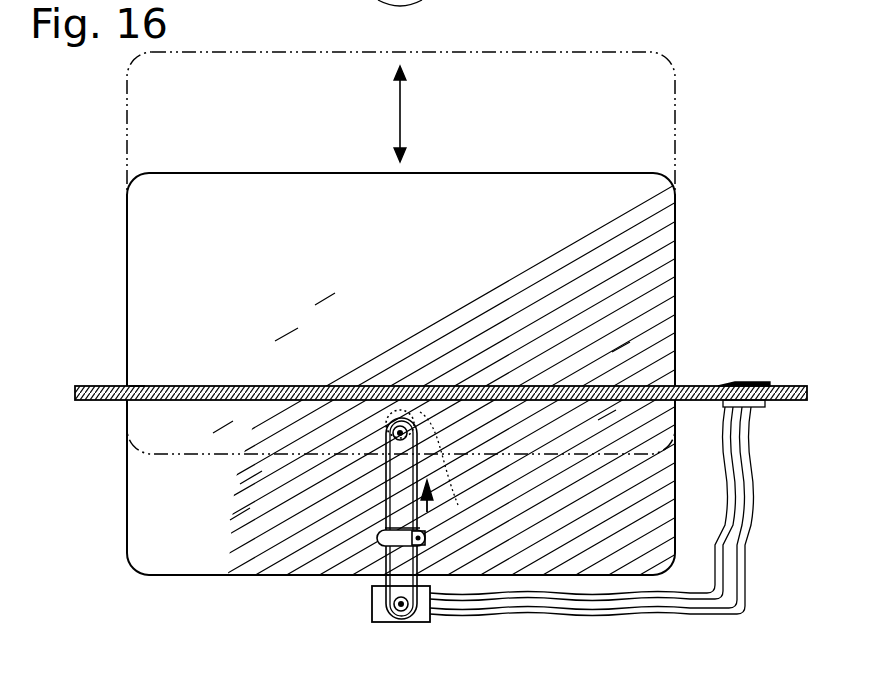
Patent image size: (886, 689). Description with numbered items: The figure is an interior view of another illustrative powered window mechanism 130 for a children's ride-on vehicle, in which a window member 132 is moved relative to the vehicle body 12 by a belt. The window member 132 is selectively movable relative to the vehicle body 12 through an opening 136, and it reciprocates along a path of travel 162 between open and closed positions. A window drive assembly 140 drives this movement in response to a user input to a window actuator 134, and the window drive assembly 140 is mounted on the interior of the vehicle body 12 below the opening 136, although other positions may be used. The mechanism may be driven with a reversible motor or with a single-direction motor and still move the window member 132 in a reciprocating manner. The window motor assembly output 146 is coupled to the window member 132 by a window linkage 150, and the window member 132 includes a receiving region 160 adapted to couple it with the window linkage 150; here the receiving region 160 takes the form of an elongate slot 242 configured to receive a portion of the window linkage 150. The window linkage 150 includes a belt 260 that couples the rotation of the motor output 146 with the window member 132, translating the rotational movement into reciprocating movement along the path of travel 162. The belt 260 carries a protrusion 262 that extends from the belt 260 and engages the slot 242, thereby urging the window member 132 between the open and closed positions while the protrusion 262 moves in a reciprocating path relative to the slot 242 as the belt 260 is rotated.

The vehicle body 12 is at (93, 386).
The powered window mechanism 130 is at (729, 299).
The window member 132 is at (466, 174).
The window actuator 134 is at (730, 381).
The opening 136 is at (137, 385).
The window drive assembly 140 is at (361, 610).
The window motor assembly output 146 is at (404, 612).
The window linkage 150 is at (383, 476).
The receiving region 160 is at (427, 538).
The path of travel 162 is at (398, 116).
The elongate slot 242 is at (400, 546).
The belt 260 is at (387, 508).
The protrusion 262 is at (424, 531).